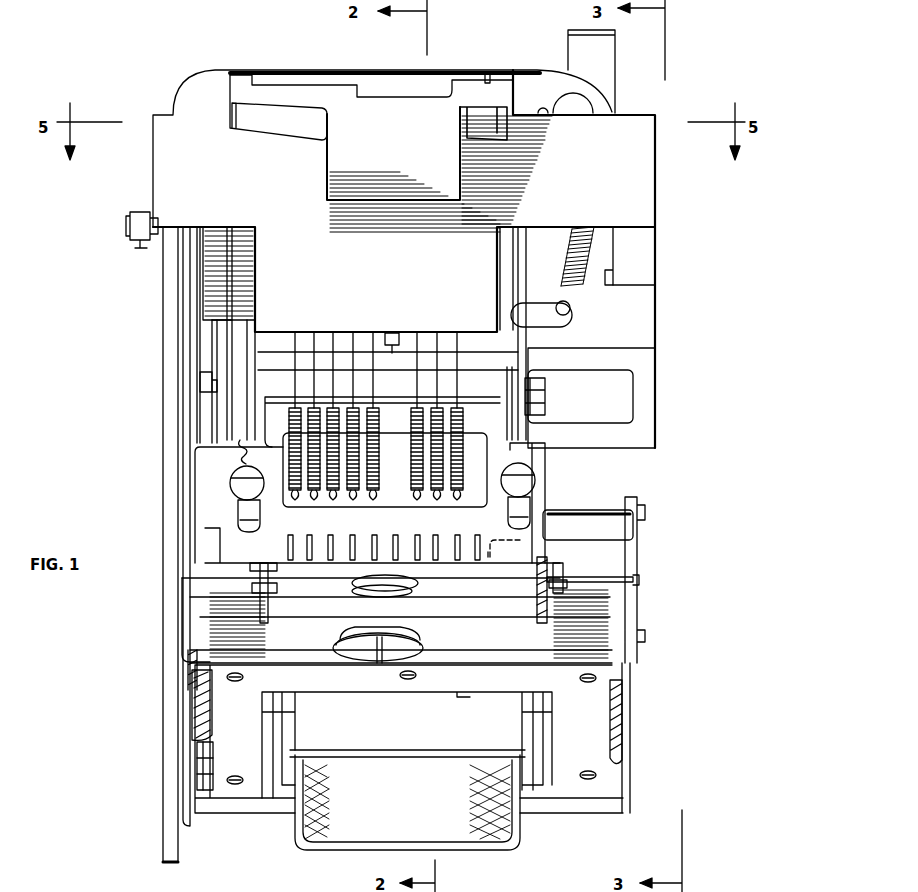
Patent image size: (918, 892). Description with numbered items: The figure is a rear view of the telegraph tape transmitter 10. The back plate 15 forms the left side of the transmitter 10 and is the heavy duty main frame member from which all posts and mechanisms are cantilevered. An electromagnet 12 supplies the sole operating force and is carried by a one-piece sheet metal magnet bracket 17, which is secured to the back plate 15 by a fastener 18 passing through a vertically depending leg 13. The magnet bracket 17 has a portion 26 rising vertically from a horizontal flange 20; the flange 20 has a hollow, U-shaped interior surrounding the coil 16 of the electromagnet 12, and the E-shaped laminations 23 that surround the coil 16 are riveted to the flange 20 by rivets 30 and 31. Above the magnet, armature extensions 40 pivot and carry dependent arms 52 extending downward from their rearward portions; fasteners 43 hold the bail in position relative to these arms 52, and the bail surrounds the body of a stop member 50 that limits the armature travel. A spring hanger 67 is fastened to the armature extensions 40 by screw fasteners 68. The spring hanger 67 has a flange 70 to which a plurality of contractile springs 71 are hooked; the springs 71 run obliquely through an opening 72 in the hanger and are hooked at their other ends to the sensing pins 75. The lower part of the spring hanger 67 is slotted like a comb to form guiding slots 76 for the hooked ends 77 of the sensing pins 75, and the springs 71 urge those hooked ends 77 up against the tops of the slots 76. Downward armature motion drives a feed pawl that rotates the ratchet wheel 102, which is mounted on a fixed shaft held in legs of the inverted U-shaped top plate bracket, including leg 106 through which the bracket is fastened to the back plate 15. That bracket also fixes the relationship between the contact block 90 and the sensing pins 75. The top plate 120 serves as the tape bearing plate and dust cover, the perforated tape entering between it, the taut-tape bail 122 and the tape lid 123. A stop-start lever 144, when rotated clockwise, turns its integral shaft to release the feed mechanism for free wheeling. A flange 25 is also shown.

The transmitter 10 is at (160, 378).
The electromagnet 12 is at (524, 818).
The vertically depending leg 13 is at (183, 731).
The back plate 15 is at (170, 811).
The coil 16 is at (305, 820).
The magnet bracket 17 is at (182, 688).
The fastener 18 is at (207, 762).
The horizontal flange 20 is at (196, 578).
The laminations 23 is at (623, 723).
The plate 25 is at (640, 578).
The portion of magnet bracket 26 is at (638, 547).
The rivet 30 is at (236, 681).
The rivet 31 is at (240, 773).
The armature extensions 40 is at (274, 727).
The fasteners 43 is at (258, 565).
The stop member 50 is at (425, 648).
The dependent arms 52 is at (543, 557).
The spring hanger 67 is at (196, 498).
The screw fasteners 68 is at (240, 475).
The flange 70 is at (546, 388).
The contractile springs 71 is at (430, 478).
The opening 72 is at (481, 462).
The sensing pins 75 is at (470, 345).
The guiding slots 76 is at (382, 567).
The hooked ends 77 is at (420, 540).
The contact block 90 is at (658, 390).
The ratchet wheel 102 is at (210, 293).
The leg 106 is at (183, 336).
The top plate 120 is at (162, 113).
The taut-tape bail 122 is at (327, 177).
The tape lid 123 is at (246, 70).
The stop-start lever 144 is at (567, 32).